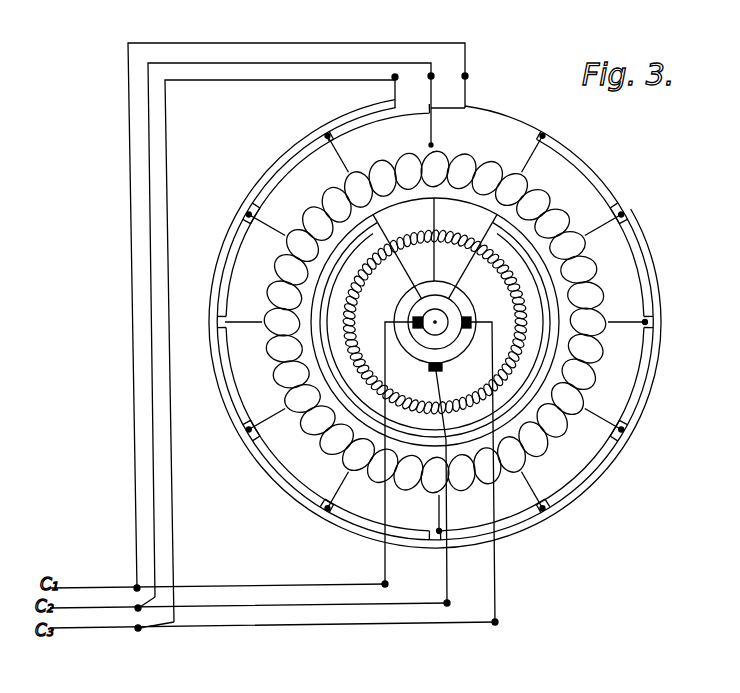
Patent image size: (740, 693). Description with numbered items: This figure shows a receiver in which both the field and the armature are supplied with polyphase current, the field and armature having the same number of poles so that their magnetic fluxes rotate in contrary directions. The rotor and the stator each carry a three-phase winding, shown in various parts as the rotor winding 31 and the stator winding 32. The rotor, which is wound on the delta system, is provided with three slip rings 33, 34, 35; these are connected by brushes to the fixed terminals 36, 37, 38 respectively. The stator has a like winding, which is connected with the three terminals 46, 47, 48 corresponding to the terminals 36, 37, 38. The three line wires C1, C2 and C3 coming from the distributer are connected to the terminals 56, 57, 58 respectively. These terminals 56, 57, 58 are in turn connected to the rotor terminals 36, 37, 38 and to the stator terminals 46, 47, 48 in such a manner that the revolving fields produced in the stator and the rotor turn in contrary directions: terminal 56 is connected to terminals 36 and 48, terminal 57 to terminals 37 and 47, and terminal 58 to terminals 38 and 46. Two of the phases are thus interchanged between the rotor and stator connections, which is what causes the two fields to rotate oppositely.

The rotor three-phase winding 31 is at (610, 215).
The stator three-phase winding 32 is at (547, 188).
The slip ring 33 is at (450, 316).
The slip ring 34 is at (458, 337).
The slip ring 35 is at (452, 345).
The fixed terminal 36 is at (387, 455).
The fixed terminal 37 is at (438, 489).
The fixed terminal 38 is at (484, 473).
The stator terminal 46 is at (395, 76).
The stator terminal 47 is at (431, 76).
The stator terminal 48 is at (465, 76).
The line terminal 56 is at (137, 588).
The line terminal 57 is at (138, 608).
The line terminal 58 is at (138, 628).